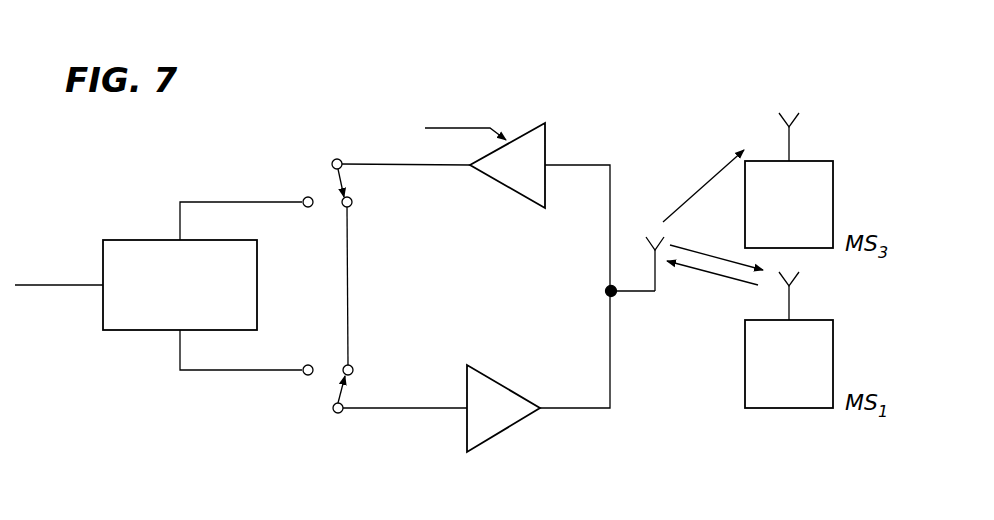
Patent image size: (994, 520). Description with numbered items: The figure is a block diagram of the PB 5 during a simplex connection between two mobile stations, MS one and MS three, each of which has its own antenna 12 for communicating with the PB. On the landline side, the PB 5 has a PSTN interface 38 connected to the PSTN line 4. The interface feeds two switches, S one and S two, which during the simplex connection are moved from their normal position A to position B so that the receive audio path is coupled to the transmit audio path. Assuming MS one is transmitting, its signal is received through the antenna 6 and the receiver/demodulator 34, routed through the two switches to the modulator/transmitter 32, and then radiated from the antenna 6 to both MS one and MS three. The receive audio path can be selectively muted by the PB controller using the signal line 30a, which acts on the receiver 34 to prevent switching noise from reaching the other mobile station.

The PSTN line 4 is at (55, 287).
The PSTN interface 38 is at (118, 332).
The PB 5 is at (352, 92).
The signal line 30a is at (443, 128).
The demodulating receiver assembly 34 is at (500, 183).
The modulating transmitter assembly 32 is at (500, 432).
The antenna 6 is at (657, 293).
The antenna 12 is at (795, 138).